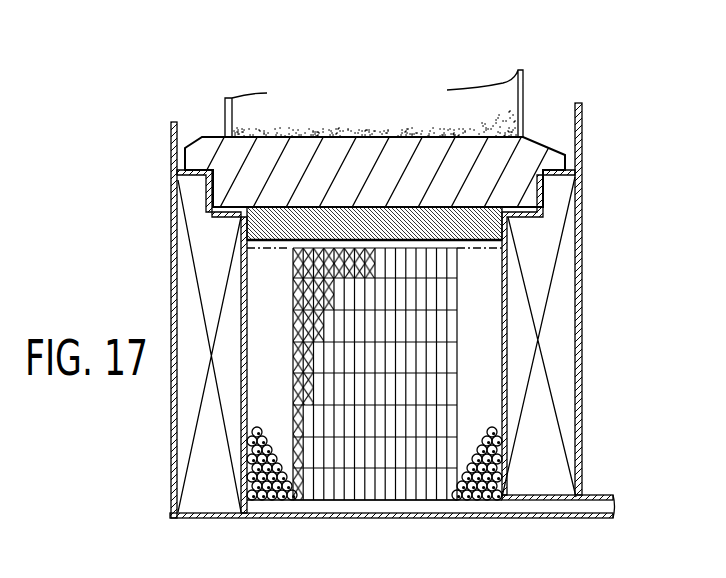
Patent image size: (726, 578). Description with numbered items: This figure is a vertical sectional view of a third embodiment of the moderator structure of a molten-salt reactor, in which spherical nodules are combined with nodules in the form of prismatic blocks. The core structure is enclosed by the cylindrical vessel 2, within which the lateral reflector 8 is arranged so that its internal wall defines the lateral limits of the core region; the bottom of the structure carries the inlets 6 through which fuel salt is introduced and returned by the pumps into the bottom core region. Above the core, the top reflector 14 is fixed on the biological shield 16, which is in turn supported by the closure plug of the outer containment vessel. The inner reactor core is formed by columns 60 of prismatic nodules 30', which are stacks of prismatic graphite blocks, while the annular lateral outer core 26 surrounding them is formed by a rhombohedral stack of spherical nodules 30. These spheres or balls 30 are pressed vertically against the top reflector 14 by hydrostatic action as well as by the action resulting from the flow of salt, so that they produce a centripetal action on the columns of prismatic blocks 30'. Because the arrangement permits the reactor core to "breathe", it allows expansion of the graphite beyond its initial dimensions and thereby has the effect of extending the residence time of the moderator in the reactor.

The cylindrical vessel 2 is at (171, 268).
The lateral reflector 8 is at (563, 298).
The inlets 6 is at (586, 503).
The biological shield 16 is at (362, 152).
The top reflector 14 is at (374, 233).
The lateral outer core 26 is at (277, 320).
The columns of prismatic nodules 60 is at (478, 323).
The spherical nodules 30 is at (537, 426).
The prismatic nodules 30' is at (273, 415).